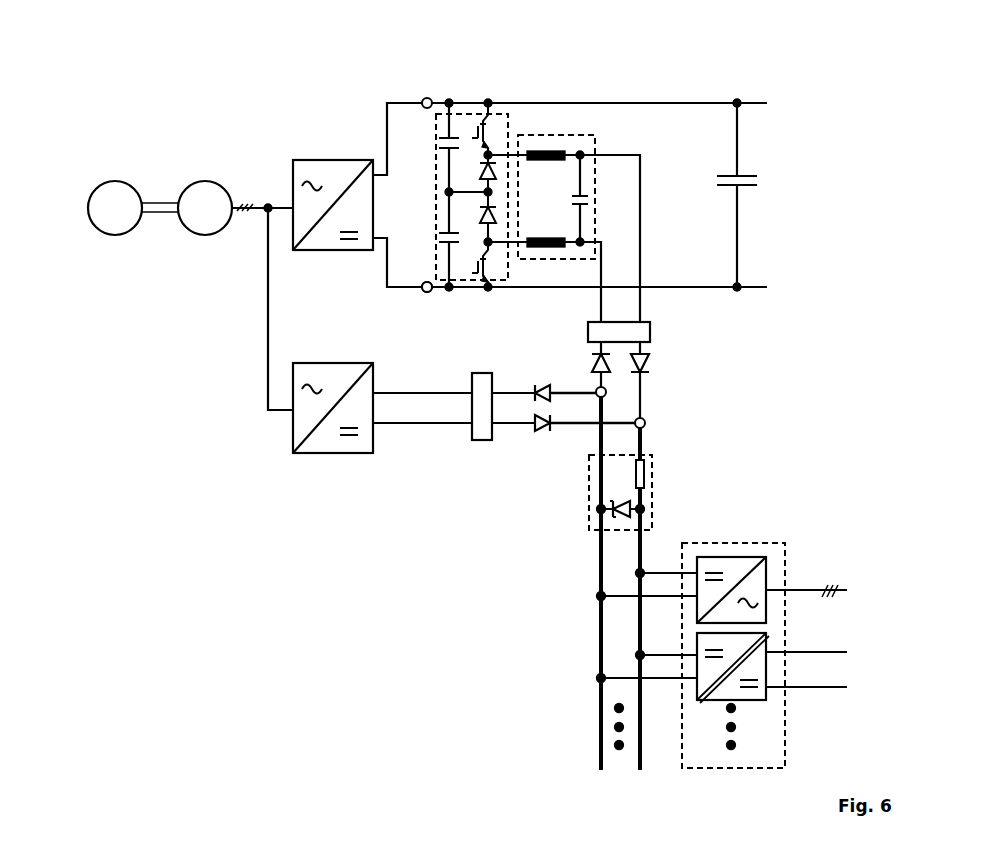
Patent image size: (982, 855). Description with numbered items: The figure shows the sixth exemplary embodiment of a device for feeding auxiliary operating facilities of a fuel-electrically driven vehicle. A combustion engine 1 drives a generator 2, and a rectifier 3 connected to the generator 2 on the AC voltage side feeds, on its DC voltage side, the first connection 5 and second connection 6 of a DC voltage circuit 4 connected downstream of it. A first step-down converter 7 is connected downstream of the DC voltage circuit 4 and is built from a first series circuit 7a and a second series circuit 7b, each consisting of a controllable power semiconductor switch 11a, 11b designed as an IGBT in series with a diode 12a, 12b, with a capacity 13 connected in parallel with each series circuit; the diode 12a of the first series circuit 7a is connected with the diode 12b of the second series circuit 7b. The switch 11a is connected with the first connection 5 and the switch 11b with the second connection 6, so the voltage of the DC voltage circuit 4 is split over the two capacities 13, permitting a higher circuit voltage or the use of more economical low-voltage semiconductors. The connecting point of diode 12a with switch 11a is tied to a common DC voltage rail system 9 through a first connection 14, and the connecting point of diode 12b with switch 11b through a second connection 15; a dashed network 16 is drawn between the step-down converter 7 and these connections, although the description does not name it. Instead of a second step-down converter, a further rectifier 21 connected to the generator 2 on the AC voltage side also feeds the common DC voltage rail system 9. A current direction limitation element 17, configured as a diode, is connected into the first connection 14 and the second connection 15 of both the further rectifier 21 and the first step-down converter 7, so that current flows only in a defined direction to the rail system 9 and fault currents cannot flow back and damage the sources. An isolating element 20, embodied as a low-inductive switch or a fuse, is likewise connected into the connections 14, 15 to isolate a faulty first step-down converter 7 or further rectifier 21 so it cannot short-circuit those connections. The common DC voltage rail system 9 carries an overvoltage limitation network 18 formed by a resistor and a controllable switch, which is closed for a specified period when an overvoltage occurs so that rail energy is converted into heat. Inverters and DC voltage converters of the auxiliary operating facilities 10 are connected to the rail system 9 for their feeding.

The combustion engine 1 is at (113, 181).
The generator 2 is at (203, 181).
The rectifier 3 is at (293, 160).
The DC voltage circuit 4 is at (395, 203).
The first connection 5 is at (426, 97).
The second connection 6 is at (422, 289).
The first step-down converter 7 is at (467, 114).
The first series circuit 7a is at (470, 159).
The second series circuit 7b is at (468, 250).
The common DC voltage rail system 9 is at (622, 632).
The auxiliary operating facilities 10 is at (682, 560).
The controllable power semiconductor switch 11a is at (485, 120).
The controllable power semiconductor switch 11b is at (492, 262).
The diode 12a is at (493, 165).
The diode 12b is at (497, 208).
The capacity 13 is at (444, 234).
The first connection 14 is at (598, 322).
The second connection 15 is at (637, 322).
The filter 16 is at (595, 135).
The current direction limitation element 17 is at (613, 355).
The overvoltage limitation network 18 is at (589, 499).
The isolating element 20 is at (648, 322).
The further rectifier 21 is at (293, 376).